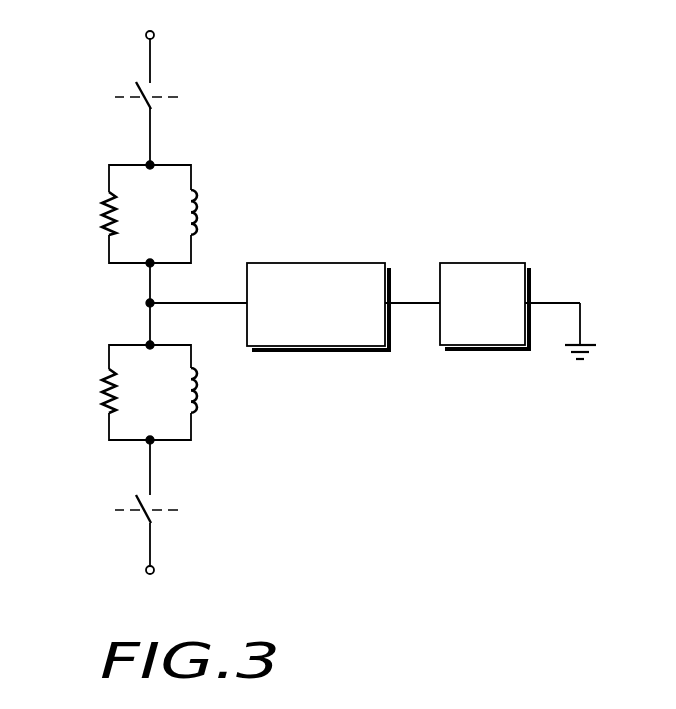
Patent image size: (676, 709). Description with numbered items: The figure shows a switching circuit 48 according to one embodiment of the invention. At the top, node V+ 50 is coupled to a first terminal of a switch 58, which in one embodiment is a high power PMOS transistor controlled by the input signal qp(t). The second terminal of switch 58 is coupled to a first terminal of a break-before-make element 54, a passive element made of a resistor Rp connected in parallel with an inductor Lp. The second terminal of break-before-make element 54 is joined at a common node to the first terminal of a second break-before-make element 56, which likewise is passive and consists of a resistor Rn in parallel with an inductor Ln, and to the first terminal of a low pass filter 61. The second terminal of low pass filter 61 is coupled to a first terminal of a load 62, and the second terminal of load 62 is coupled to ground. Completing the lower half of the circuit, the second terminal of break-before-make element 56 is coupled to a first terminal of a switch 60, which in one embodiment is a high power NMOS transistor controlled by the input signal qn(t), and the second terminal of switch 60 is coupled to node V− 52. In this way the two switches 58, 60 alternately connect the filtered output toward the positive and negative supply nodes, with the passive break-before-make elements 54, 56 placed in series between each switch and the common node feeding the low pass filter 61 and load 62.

The switching circuit 48 is at (469, 83).
The node V+ 50 is at (143, 38).
The node V− 52 is at (161, 569).
The break-before-make (BBM) element 54 is at (239, 190).
The break-before-make (BBM) element 56 is at (230, 430).
The switch 58 is at (142, 103).
The switch 60 is at (142, 518).
The low pass filter 61 is at (341, 262).
The load 62 is at (492, 262).